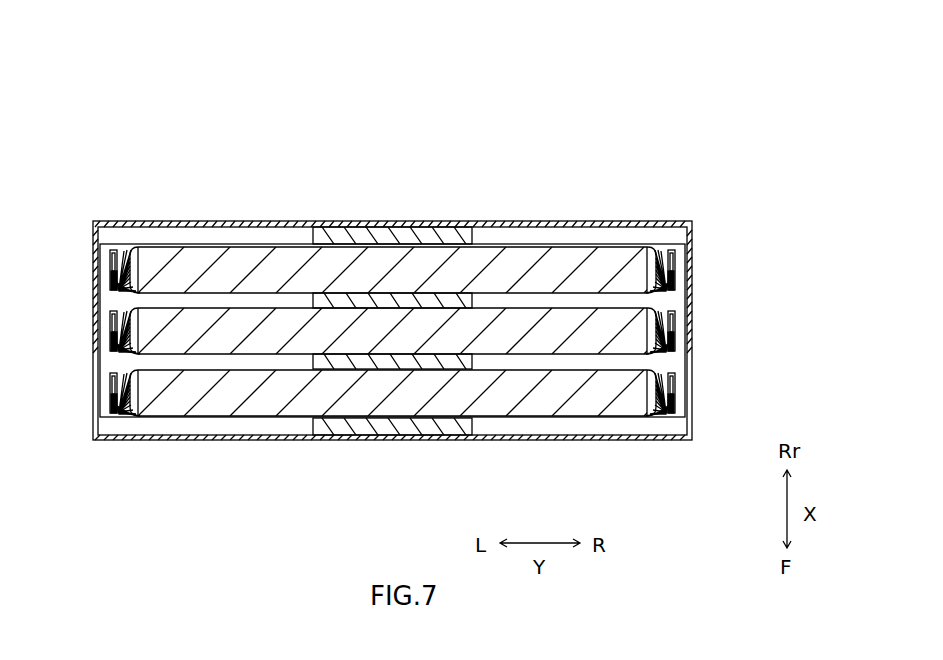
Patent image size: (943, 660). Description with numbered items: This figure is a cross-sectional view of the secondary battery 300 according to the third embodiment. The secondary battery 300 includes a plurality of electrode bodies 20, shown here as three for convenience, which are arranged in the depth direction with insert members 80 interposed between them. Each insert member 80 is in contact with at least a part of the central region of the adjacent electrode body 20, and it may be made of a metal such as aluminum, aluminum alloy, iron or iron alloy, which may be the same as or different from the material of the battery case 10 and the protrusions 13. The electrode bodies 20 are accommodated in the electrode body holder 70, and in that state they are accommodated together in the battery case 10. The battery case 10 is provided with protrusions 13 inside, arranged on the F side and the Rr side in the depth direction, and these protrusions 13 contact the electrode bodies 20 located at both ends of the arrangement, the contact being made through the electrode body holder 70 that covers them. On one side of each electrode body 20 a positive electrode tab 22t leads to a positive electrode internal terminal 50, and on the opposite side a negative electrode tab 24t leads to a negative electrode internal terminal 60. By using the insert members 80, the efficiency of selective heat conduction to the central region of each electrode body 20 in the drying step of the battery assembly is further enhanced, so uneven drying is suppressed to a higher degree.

The secondary battery 300 is at (115, 106).
The battery case 10 is at (549, 222).
The protrusion 13 is at (398, 233).
The electrode body 20 is at (285, 382).
The positive electrode tab 22t is at (125, 252).
The negative electrode tab 24t is at (660, 251).
The positive electrode internal terminal 50 is at (108, 253).
The negative electrode internal terminal 60 is at (676, 258).
The electrode body holder 70 is at (494, 246).
The insert member 80 is at (474, 298).